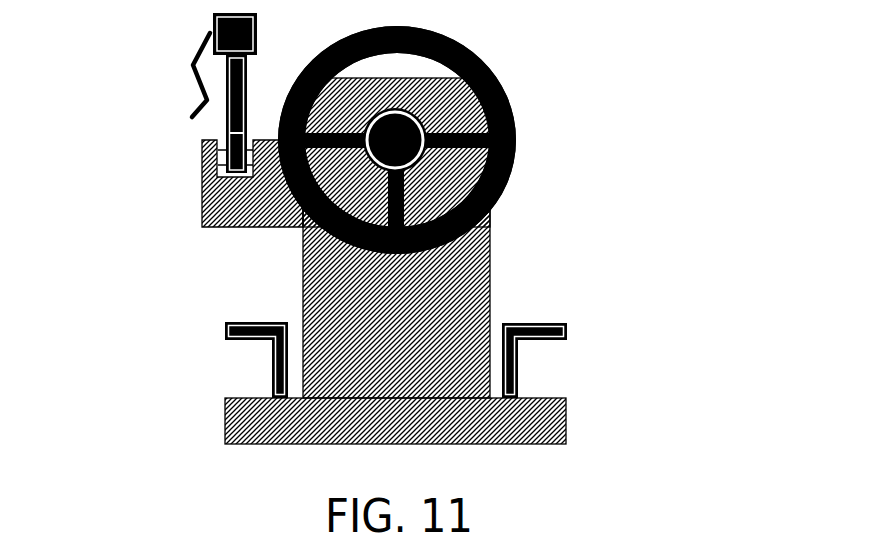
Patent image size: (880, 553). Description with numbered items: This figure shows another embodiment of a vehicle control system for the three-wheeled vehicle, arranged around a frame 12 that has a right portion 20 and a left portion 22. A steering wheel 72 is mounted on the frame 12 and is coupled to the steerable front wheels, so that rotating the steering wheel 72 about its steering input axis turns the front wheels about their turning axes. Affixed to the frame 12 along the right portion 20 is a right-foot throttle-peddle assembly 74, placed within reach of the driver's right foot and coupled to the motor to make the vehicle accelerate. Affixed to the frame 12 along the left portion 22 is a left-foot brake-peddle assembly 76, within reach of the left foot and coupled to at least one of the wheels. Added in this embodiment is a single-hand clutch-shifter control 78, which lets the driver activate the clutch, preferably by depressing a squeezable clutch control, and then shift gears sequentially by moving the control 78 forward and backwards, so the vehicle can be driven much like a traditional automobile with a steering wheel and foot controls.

The frame 12 is at (348, 277).
The right portion 20 is at (490, 311).
The left portion 22 is at (165, 183).
The steering wheel 72 is at (518, 128).
The right-foot throttle-peddle assembly 74 is at (537, 353).
The left-foot brake-peddle assembly 76 is at (257, 352).
The single-hand clutch-shifter control 78 is at (177, 51).